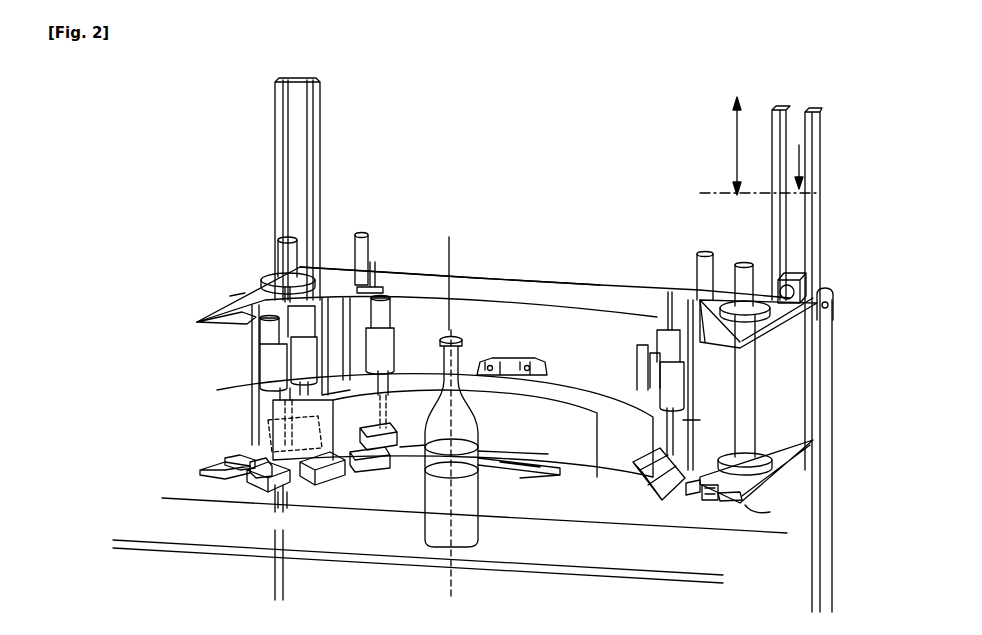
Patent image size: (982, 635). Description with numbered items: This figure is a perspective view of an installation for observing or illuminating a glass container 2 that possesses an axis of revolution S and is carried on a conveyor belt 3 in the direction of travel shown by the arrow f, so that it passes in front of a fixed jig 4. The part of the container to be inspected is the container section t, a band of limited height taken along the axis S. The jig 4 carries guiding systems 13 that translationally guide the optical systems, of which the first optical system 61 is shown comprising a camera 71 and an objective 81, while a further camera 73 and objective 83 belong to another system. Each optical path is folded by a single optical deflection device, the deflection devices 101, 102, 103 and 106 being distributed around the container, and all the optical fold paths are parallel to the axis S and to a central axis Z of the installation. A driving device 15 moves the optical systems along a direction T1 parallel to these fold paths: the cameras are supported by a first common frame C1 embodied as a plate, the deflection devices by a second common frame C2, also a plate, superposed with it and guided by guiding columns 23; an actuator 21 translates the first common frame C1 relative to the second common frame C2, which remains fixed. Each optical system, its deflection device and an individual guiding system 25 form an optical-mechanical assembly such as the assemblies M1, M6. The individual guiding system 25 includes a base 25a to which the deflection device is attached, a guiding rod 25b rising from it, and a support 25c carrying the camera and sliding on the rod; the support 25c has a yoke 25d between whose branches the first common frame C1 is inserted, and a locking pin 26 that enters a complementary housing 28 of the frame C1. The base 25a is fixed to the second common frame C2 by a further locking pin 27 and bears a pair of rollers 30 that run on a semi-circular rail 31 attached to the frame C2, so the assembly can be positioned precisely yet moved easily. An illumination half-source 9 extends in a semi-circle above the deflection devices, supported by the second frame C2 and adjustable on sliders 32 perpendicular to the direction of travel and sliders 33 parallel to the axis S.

The glass container 2 is at (433, 524).
The conveyor belt 3 is at (578, 540).
The jig 4 is at (272, 122).
The illumination half-source 9 is at (574, 386).
The guiding system 13 is at (370, 237).
The driving system 15 is at (758, 390).
The actuator 21 is at (755, 507).
The guiding column 23 is at (705, 252).
The individual guiding system 25 is at (250, 422).
The base 25a is at (255, 470).
The guiding rod 25b is at (262, 287).
The support 25c is at (225, 318).
The yoke 25d is at (710, 354).
The locking pin 26 is at (240, 296).
The locking pin 27 is at (252, 458).
The housing 28 is at (602, 296).
The pair of rollers 30 is at (210, 472).
The semi-circular rail 31 is at (703, 500).
The slider 32 is at (515, 478).
The slider 33 is at (500, 358).
The optical system 61 is at (262, 368).
The camera 71 is at (258, 337).
The camera 73 is at (390, 315).
The objective 81 is at (292, 360).
The objective 83 is at (392, 349).
The optical deflection device 101 is at (283, 500).
The optical deflection device 102 is at (313, 470).
The optical deflection device 103 is at (385, 468).
The optical deflection device 106 is at (660, 500).
The first common frame C1 is at (552, 286).
The second common frame C2 is at (772, 488).
The optical-mechanical assembly M1 is at (251, 395).
The optical-mechanical assembly M6 is at (688, 418).
The axis of revolution S is at (453, 318).
The direction of translation T1 is at (735, 147).
The central axis Z is at (453, 253).
The direction of travel f is at (130, 523).
The container section t is at (468, 547).